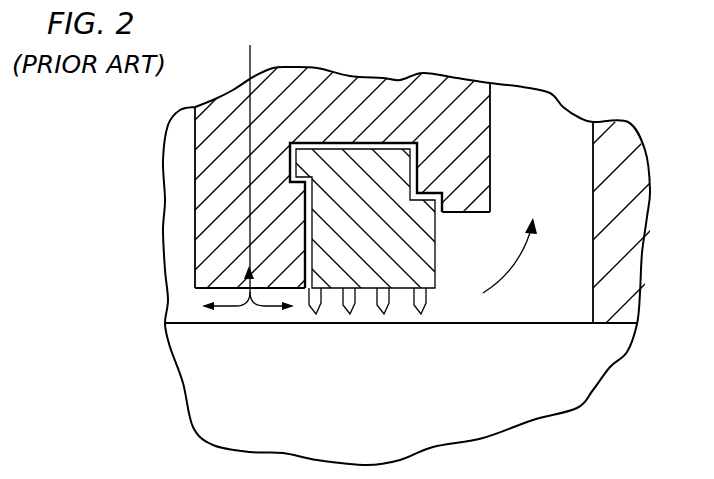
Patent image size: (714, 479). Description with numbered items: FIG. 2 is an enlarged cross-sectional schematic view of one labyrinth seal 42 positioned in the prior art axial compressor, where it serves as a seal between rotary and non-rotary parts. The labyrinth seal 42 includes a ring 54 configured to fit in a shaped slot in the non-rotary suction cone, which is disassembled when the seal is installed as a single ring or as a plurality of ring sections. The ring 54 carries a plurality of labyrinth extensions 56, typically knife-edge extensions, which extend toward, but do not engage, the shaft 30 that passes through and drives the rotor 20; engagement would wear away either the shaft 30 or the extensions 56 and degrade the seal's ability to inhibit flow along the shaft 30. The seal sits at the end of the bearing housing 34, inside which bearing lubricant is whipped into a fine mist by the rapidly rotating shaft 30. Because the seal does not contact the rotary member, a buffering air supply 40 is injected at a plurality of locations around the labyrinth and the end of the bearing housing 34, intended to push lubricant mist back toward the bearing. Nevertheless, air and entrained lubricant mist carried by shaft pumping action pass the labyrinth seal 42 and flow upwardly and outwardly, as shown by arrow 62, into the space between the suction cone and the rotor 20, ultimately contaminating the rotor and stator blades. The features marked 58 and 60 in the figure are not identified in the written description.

The rotor 20 is at (590, 171).
The shaft 30 is at (567, 323).
The bearing housing 34 is at (195, 157).
The buffering air supply 40 is at (250, 62).
The labyrinth seal 42 is at (302, 290).
The ring 54 is at (383, 224).
The labyrinth extensions 56 is at (348, 316).
The lateral movement arrows 58 is at (227, 306).
The sealing surface 60 is at (424, 326).
The arrow 62 is at (512, 267).